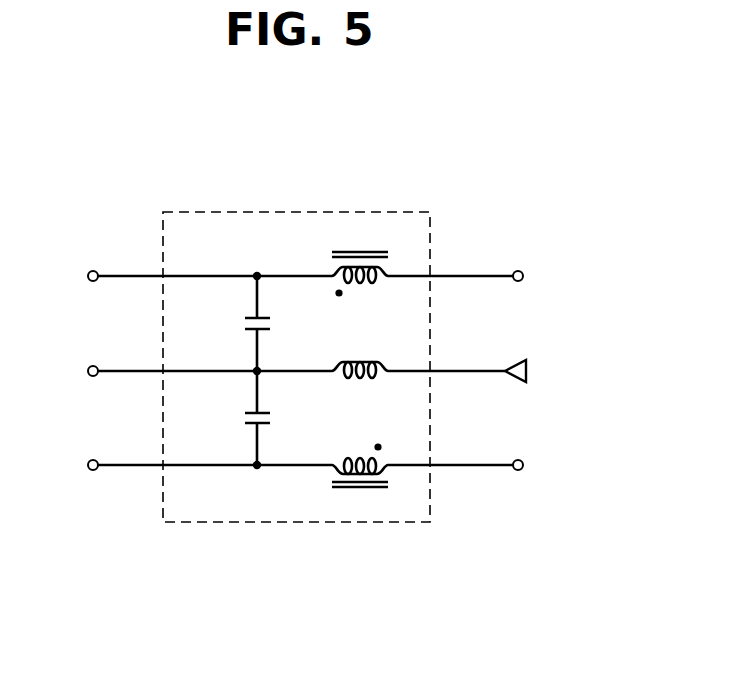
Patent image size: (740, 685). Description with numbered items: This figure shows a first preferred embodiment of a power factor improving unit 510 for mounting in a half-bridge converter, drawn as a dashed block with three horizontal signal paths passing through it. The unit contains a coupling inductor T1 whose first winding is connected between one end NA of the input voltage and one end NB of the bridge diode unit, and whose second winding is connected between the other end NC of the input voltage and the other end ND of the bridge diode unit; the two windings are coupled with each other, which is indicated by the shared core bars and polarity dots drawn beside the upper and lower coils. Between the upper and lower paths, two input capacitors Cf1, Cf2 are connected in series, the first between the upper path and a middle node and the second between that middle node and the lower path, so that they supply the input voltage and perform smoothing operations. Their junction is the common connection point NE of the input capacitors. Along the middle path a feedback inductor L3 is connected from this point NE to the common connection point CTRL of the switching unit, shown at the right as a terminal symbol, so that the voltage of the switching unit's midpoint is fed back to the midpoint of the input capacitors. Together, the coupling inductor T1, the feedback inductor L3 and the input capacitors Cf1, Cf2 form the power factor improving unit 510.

The power factor improving unit 510 is at (302, 212).
The coupling inductor T1 is at (360, 369).
The feedback inductor L3 is at (360, 388).
The input capacitor Cf1 is at (233, 323).
The input capacitor Cf2 is at (233, 418).
The one end of the input voltage NA is at (189, 277).
The one end of the bridge diode unit NB is at (477, 277).
The other end of the input voltage NC is at (189, 466).
The other end of the bridge diode unit ND is at (478, 466).
The common connection point of the input capacitors NE is at (189, 372).
The common connection point of the switching unit CTRL is at (489, 372).